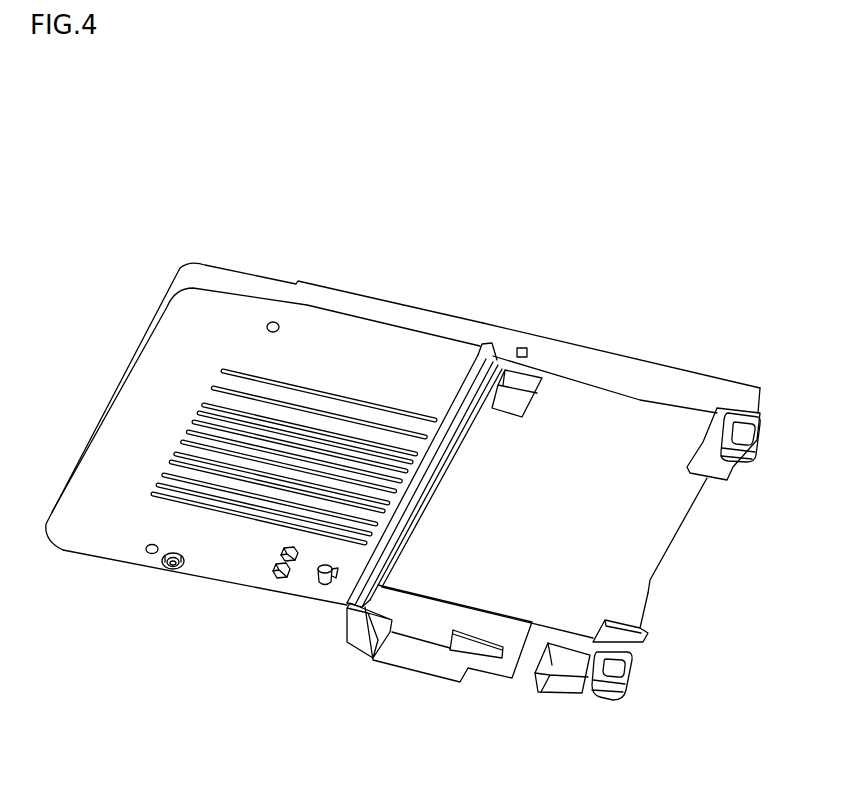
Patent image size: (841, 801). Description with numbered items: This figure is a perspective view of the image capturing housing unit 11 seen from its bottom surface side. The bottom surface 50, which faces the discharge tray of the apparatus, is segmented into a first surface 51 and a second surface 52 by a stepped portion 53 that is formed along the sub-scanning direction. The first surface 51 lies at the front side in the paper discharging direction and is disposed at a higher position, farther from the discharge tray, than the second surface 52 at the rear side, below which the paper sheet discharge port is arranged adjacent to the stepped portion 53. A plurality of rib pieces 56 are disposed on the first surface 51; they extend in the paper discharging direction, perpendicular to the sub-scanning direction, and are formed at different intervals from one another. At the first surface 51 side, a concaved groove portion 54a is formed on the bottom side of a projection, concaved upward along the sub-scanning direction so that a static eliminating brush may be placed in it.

The image capturing housing unit 11 is at (132, 161).
The bottom surface 50 is at (653, 262).
The first surface 51 is at (440, 357).
The second surface 52 is at (597, 415).
The stepped portion 53 is at (408, 540).
The concaved groove portion 54a is at (347, 618).
The rib pieces 56 is at (328, 395).